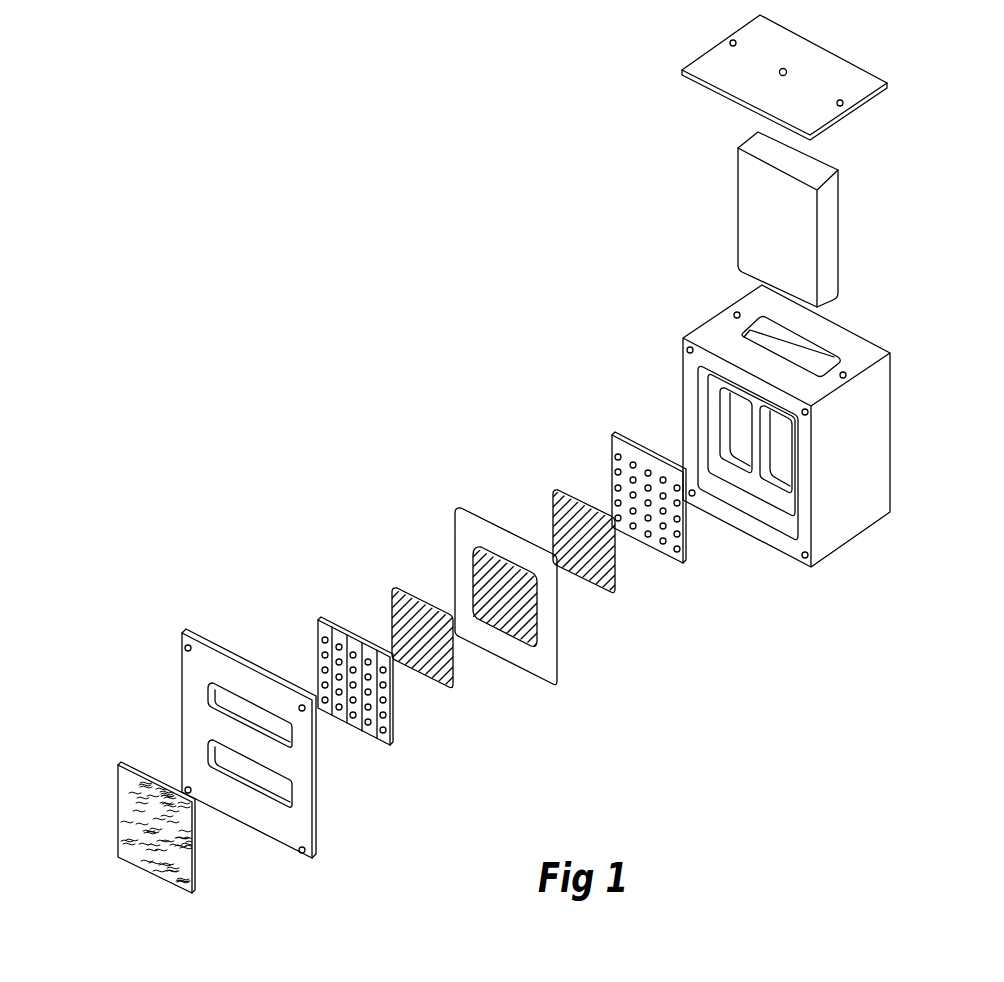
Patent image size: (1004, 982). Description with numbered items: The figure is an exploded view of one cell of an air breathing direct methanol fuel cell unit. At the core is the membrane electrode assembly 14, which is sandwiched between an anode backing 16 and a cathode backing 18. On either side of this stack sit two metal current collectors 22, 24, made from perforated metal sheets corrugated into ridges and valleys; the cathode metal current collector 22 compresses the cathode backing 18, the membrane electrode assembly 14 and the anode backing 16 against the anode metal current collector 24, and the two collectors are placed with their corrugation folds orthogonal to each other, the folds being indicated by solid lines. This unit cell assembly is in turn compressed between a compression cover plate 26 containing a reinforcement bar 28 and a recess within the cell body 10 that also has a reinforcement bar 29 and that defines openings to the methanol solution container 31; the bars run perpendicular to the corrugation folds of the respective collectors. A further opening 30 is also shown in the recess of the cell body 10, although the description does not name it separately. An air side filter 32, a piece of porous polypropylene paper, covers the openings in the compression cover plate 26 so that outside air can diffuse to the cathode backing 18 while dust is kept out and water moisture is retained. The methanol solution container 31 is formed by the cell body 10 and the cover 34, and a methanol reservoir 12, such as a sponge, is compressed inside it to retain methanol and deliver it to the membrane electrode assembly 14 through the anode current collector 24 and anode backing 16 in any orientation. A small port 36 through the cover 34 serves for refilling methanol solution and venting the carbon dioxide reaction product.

The cell body 10 is at (857, 513).
The methanol reservoir 12 is at (827, 242).
The membrane electrode assembly 14 is at (473, 528).
The anode backing 16 is at (565, 497).
The cathode backing 18 is at (407, 597).
The cathode metal current collector 22 is at (331, 630).
The anode metal current collector 24 is at (626, 453).
The compression cover plate 26 is at (267, 693).
The reinforcement bar 28 is at (232, 738).
The reinforcement bar 29 is at (757, 422).
The right window opening 30 is at (785, 468).
The methanol solution container 31 is at (833, 355).
The air side filter 32 is at (130, 818).
The cover 34 is at (823, 87).
The methanol solution injection and CO2 ventilation port 36 is at (779, 72).